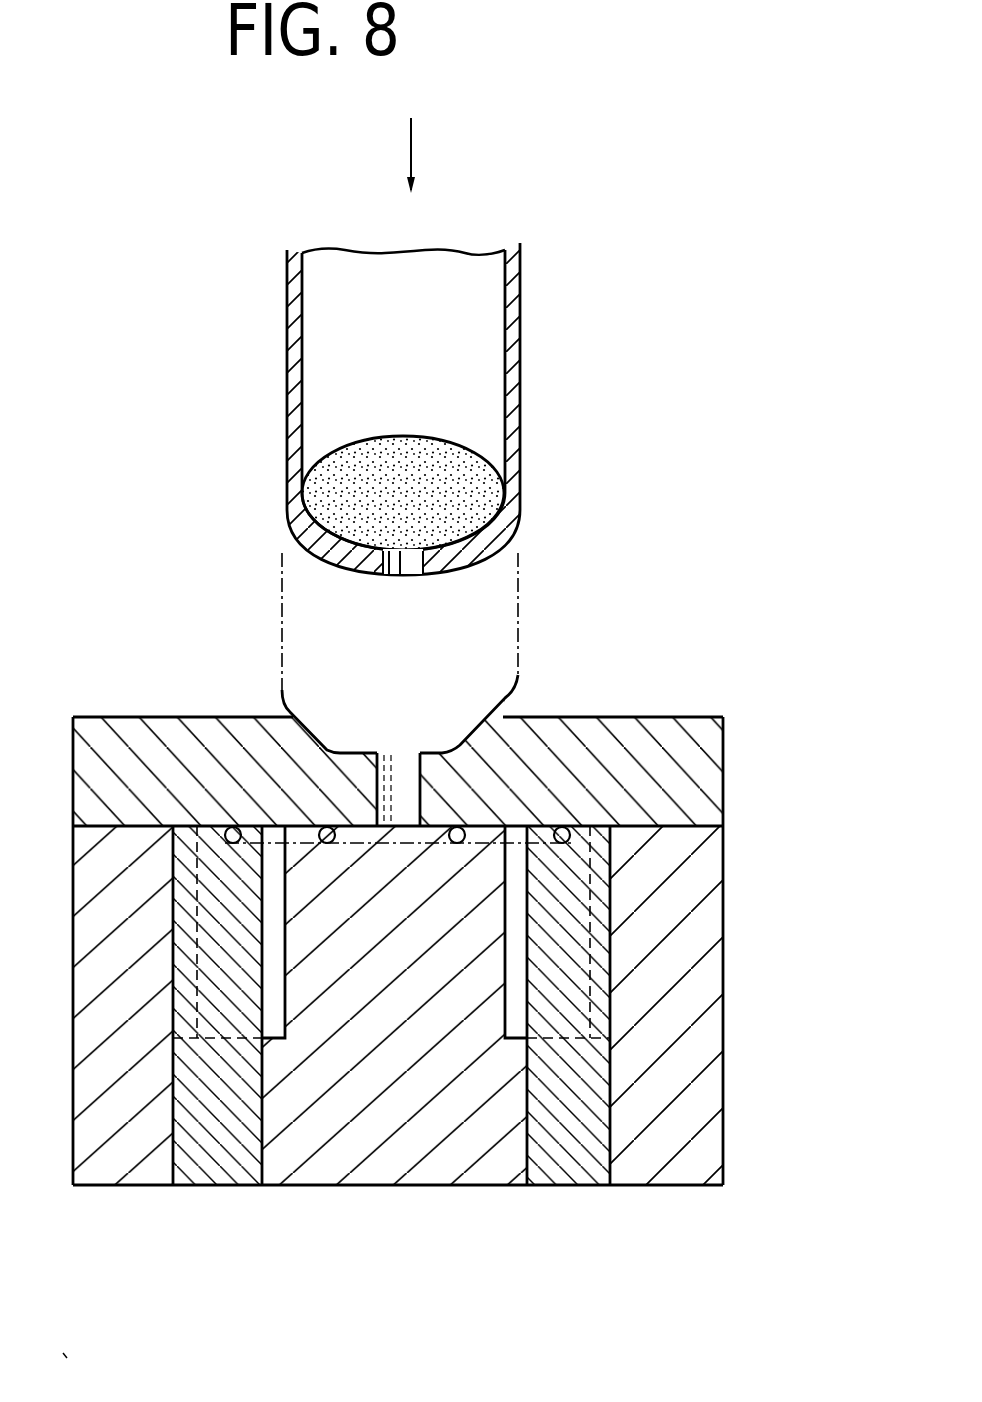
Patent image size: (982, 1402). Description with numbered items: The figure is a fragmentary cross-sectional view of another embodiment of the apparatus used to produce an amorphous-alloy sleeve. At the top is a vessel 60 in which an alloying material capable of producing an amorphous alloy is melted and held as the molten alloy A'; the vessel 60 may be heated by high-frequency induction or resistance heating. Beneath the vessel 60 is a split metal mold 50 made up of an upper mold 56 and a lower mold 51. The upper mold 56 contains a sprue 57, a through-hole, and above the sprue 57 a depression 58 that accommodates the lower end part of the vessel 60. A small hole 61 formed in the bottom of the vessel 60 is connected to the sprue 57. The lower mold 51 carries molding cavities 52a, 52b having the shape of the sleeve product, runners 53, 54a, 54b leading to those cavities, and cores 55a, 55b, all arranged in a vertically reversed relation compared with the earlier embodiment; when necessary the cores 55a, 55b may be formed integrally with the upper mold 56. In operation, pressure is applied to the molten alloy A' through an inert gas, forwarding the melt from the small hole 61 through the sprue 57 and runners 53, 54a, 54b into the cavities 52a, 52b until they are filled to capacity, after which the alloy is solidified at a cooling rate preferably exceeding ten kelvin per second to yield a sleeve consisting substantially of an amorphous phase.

The vessel 60 is at (521, 335).
The molten alloy A' is at (458, 485).
The small hole 61 is at (420, 573).
The depression 58 is at (518, 702).
The sprue 57 is at (412, 797).
The upper mold 56 is at (723, 775).
The split metal mold 50 is at (740, 876).
The lower mold 51 is at (723, 1032).
The runner 53 is at (385, 832).
The runner 54a is at (322, 826).
The runner 54b is at (460, 852).
The molding cavity 52a is at (273, 1020).
The molding cavity 52b is at (512, 1017).
The core 55a is at (210, 1155).
The core 55b is at (568, 1165).